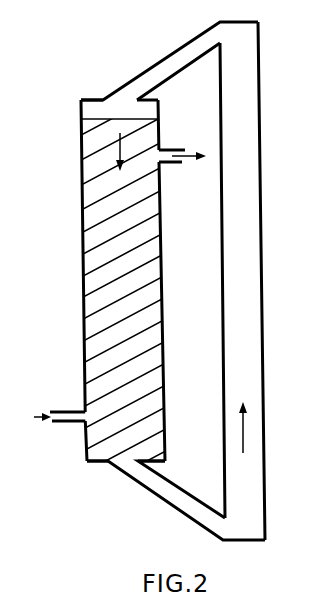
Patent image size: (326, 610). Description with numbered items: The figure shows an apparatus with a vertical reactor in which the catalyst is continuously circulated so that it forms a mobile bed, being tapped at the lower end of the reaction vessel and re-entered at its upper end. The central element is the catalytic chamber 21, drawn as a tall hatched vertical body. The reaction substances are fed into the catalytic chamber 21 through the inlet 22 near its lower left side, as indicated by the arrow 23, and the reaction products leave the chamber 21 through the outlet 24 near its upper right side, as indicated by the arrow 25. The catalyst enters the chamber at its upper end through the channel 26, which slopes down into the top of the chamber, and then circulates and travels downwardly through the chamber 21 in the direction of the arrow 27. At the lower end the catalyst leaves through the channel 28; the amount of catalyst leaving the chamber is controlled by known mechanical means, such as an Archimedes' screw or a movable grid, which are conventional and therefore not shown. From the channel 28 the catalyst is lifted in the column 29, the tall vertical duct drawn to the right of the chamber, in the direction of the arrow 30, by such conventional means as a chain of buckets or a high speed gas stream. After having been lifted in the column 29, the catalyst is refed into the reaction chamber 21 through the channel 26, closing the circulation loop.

The catalytic chamber 21 is at (85, 260).
The inlet 22 is at (70, 412).
The arrow 23 is at (32, 411).
The outlet 24 is at (178, 162).
The arrow 25 is at (185, 154).
The channel 26 is at (180, 50).
The arrow 27 is at (82, 153).
The channel 28 is at (170, 503).
The column 29 is at (262, 258).
The arrow 30 is at (243, 420).